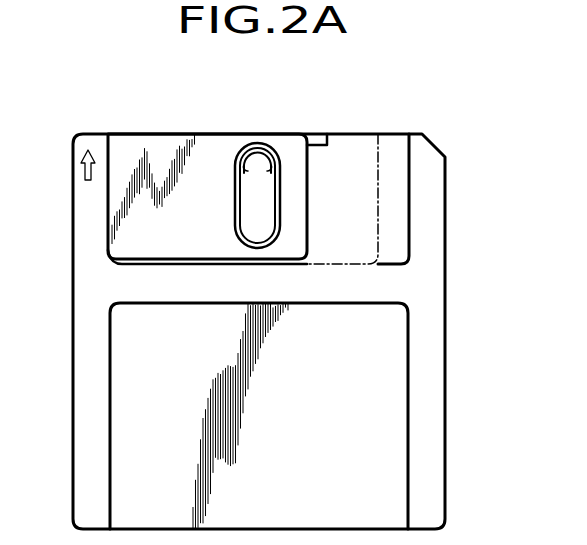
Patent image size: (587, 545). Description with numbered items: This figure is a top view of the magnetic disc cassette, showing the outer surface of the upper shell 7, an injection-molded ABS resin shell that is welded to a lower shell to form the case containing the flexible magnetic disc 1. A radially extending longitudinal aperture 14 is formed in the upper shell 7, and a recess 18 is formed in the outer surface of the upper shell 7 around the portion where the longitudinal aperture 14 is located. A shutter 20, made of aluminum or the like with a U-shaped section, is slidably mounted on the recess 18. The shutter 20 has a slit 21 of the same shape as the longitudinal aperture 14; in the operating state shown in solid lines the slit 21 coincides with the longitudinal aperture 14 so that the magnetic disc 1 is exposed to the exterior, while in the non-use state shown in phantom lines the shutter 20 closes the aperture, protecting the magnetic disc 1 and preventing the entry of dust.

The upper shell 7 is at (437, 258).
The recess 18 is at (390, 147).
The shutter 20 is at (133, 143).
The slit 21 is at (243, 147).
The flexible magnetic disc 1 is at (252, 213).
The longitudinal aperture 14 is at (268, 148).